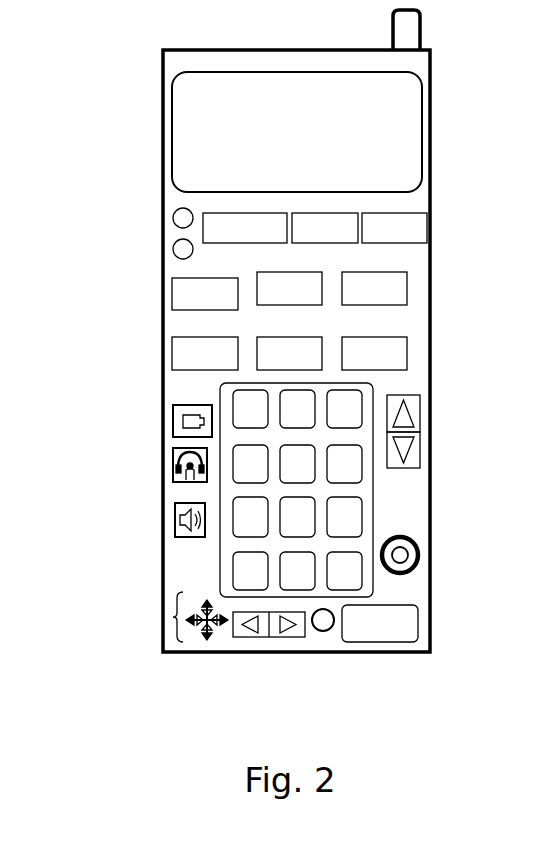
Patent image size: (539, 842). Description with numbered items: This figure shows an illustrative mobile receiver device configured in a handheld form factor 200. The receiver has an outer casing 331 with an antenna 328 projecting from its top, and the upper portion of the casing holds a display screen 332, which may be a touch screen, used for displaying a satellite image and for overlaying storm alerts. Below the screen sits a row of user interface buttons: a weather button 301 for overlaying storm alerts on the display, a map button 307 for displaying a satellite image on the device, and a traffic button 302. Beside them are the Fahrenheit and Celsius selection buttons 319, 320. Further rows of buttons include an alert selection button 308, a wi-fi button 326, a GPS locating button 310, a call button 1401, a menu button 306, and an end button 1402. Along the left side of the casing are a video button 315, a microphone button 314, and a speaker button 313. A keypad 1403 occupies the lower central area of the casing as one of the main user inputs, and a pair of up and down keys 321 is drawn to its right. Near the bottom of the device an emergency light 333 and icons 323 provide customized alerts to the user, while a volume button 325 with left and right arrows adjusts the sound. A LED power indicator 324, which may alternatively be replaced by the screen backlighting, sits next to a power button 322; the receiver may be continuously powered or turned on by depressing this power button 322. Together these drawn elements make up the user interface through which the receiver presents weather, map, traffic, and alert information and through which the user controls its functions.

The form factor 200 is at (8, 60).
The antenna 328 is at (421, 27).
The outer casing 331 is at (432, 110).
The display screen 332 is at (420, 155).
The traffic button 302 is at (413, 212).
The weather button 301 is at (267, 244).
The map button 307 is at (323, 244).
The Fahrenheit selection button 319 is at (166, 207).
The Celsius selection button 320 is at (166, 243).
The alert selection button 308 is at (166, 290).
The wi-fi button 326 is at (267, 305).
The GPS locating button 310 is at (408, 276).
The call button 1401 is at (166, 342).
The menu button 306 is at (288, 336).
The end button 1402 is at (410, 337).
The video button 315 is at (170, 413).
The microphone button 314 is at (170, 458).
The speaker button 313 is at (170, 520).
The up/down buttons 321 is at (420, 432).
The keypad 1403 is at (373, 495).
The emergency light 333 is at (420, 562).
The icons 323 is at (172, 617).
The volume button 325 is at (247, 638).
The LED power indicator 324 is at (323, 635).
The power button 322 is at (418, 638).